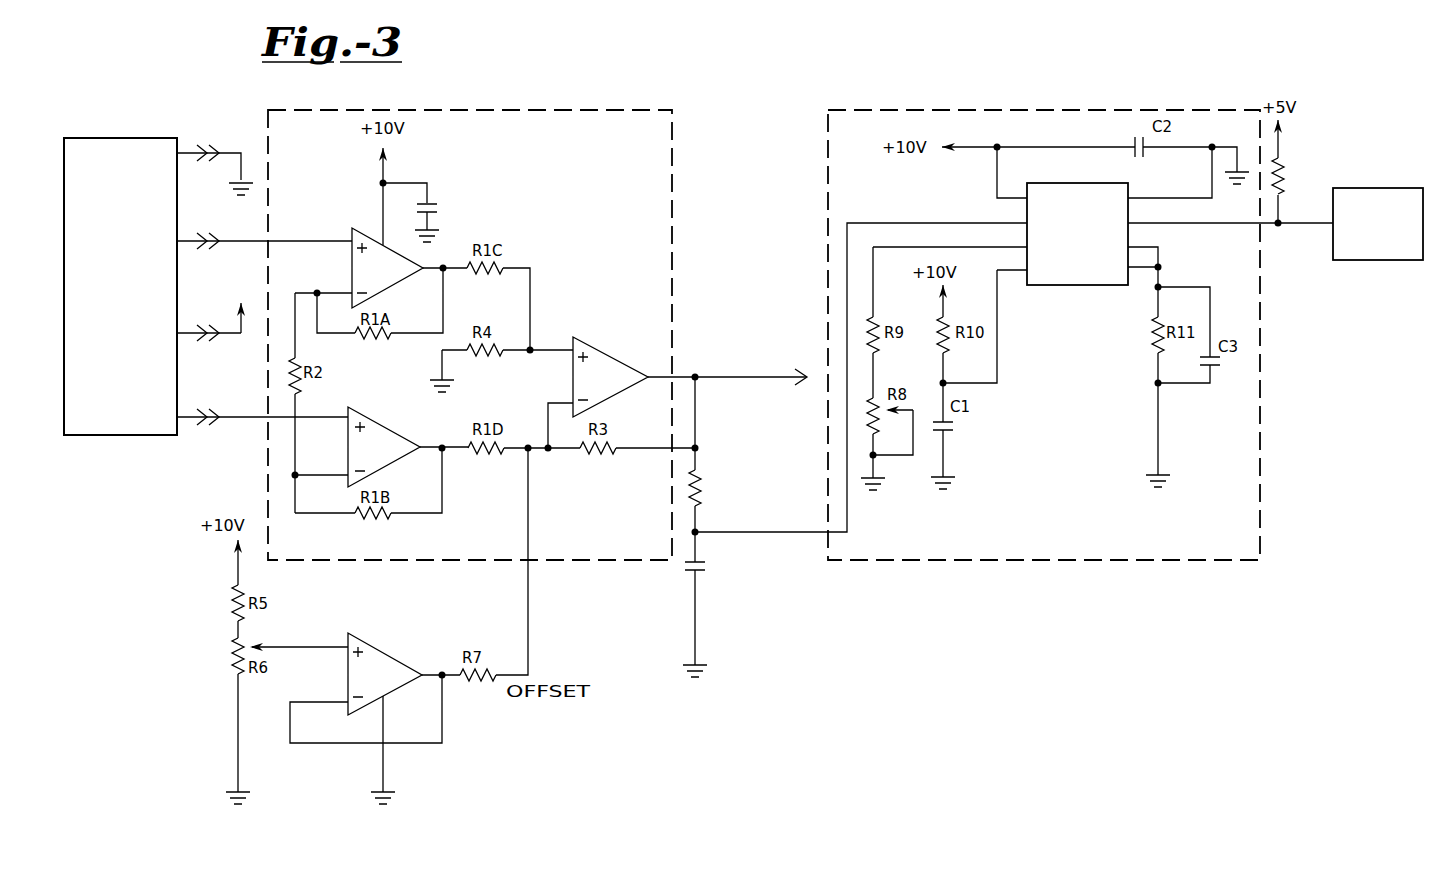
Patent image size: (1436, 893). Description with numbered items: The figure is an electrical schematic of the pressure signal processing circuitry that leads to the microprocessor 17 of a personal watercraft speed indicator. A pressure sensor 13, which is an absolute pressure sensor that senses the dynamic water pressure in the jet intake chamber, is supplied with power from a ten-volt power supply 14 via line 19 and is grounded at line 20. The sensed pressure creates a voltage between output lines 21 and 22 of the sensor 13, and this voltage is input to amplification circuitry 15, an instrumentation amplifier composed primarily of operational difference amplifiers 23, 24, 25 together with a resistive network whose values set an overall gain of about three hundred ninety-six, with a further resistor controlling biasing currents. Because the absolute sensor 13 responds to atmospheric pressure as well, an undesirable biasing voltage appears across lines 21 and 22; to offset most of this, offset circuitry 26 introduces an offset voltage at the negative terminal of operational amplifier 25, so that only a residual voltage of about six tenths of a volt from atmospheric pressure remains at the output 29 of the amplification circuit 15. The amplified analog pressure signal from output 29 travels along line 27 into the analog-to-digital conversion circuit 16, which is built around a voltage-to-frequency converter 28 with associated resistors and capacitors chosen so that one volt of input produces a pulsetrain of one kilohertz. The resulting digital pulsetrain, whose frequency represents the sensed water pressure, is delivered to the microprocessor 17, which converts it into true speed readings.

The pressure sensor 13 is at (129, 350).
The power supply 14 is at (238, 312).
The amplification circuitry 15 is at (572, 105).
The analog-to-digital conversion circuit 16 is at (1023, 105).
The microprocessor 17 is at (1347, 188).
The line 19 is at (235, 335).
The line 20 is at (240, 150).
The output line 21 is at (250, 238).
The output line 22 is at (240, 420).
The operational difference amplifier 23 is at (368, 232).
The operational difference amplifier 24 is at (373, 415).
The operational difference amplifier 25 is at (588, 337).
The offset circuitry 26 is at (432, 748).
The line 27 is at (937, 222).
The voltage-to-frequency converter 28 is at (1050, 287).
The output 29 is at (725, 380).